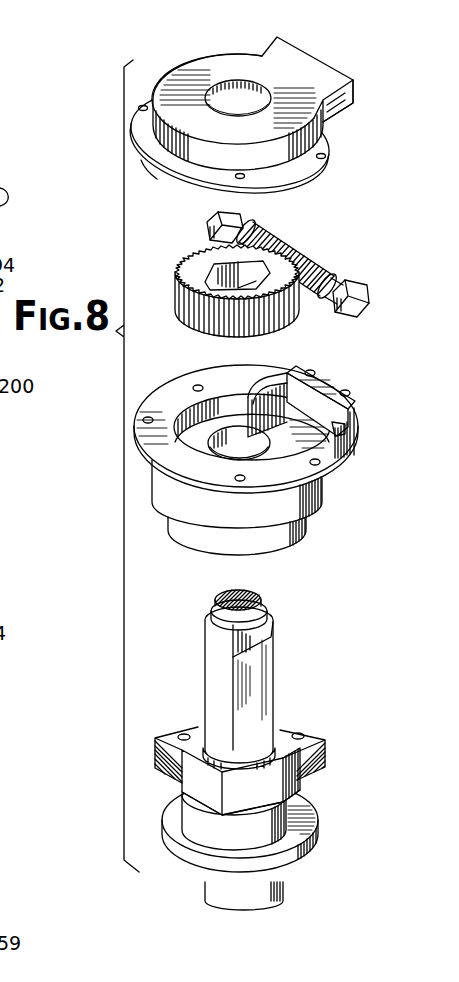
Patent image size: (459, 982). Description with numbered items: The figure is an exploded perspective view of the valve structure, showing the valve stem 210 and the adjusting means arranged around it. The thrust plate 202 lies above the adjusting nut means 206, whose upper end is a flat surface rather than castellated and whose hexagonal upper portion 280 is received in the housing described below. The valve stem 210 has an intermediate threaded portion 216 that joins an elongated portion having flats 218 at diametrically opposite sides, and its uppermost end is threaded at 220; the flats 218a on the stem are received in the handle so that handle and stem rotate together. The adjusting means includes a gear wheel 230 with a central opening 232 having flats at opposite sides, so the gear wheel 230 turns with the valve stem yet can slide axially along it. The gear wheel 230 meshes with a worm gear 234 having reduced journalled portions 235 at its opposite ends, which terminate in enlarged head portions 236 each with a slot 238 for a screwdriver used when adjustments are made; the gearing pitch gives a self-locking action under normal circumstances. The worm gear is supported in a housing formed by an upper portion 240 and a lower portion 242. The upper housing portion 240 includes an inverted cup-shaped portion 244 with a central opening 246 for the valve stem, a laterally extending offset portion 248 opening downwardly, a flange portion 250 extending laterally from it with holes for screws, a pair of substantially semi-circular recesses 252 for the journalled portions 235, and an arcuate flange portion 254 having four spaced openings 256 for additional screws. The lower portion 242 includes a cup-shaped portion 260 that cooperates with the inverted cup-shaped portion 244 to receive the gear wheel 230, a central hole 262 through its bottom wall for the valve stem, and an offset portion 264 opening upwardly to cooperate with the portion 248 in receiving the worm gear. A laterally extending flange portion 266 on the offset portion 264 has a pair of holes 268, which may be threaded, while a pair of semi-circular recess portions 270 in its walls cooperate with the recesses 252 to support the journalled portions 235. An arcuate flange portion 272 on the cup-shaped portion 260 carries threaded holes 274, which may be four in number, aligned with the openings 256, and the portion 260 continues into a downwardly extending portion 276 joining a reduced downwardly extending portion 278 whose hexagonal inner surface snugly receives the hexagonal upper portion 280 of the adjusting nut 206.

The thrust plate 202 is at (177, 724).
The adjusting nut means 206 is at (304, 800).
The valve stem 210 is at (290, 887).
The intermediate threaded portion 216 is at (274, 740).
The flats 218 is at (265, 657).
The flats 218a is at (262, 624).
The threaded end portion 220 is at (256, 603).
The gear wheel 230 is at (190, 322).
The opening 232 is at (255, 266).
The worm gear 234 is at (307, 252).
The reduced journalled portion 235 is at (249, 225).
The enlarged head portion 236 is at (212, 217).
The slot 238 is at (372, 300).
The upper housing portion 240 is at (353, 43).
The lower housing portion 242 is at (356, 392).
The inverted cup-shaped portion 244 is at (200, 142).
The central opening 246 is at (240, 98).
The offset portion 248 is at (337, 120).
The flange portion 250 is at (357, 92).
The semi-circular recesses 252 is at (328, 123).
The arcuate flange portion 254 is at (141, 172).
The spaced openings 256 is at (143, 106).
The cup-shaped portion 260 is at (222, 392).
The central hole 262 is at (251, 444).
The offset portion 264 is at (249, 388).
The flange portion 266 is at (356, 407).
The holes 268 is at (315, 373).
The semi-circular recess portions 270 is at (287, 371).
The arcuate flange portion 272 is at (137, 458).
The threaded holes 274 is at (148, 416).
The downwardly extending portion 276 is at (312, 500).
The reduced downwardly extending portion 278 is at (182, 524).
The hexagonal upper portion 280 is at (303, 763).